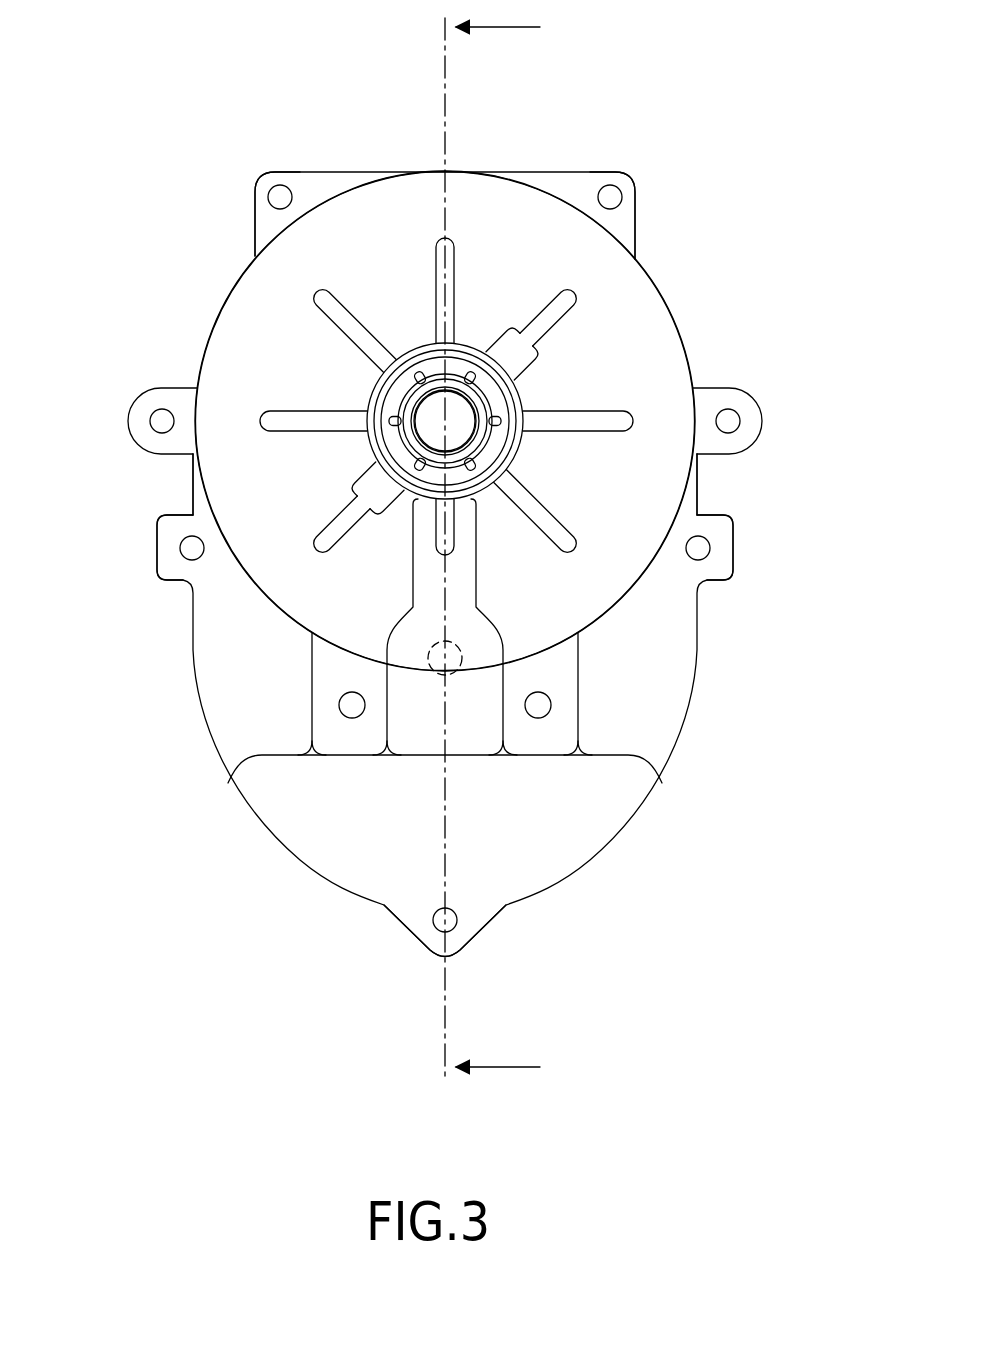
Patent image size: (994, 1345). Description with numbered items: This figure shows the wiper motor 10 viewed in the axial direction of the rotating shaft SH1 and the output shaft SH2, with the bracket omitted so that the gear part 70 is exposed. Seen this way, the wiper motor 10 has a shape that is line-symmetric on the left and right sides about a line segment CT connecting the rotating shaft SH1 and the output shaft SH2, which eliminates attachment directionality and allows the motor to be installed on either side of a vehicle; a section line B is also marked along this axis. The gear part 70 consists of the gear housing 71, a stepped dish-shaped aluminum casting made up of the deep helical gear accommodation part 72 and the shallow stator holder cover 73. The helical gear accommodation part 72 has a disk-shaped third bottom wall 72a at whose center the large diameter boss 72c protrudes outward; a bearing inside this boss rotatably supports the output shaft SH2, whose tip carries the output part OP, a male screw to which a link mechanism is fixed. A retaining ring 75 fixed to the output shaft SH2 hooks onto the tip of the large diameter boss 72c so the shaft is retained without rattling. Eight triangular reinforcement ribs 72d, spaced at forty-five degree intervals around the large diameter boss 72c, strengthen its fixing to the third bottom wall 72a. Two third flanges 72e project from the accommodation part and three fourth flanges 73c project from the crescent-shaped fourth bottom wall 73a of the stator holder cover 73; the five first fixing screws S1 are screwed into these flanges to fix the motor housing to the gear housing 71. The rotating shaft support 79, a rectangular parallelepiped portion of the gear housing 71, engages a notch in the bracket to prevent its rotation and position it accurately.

The wiper motor 10 is at (130, 240).
The gear part 70 is at (670, 302).
The gear housing 71 is at (684, 742).
The helical gear accommodation part 72 is at (356, 194).
The third bottom wall 72a is at (300, 496).
The large diameter boss 72c is at (375, 393).
The reinforcement ribs 72d is at (330, 313).
The third flanges 72e is at (270, 220).
The stator holder cover 73 is at (302, 860).
The fourth bottom wall 73a is at (505, 812).
The fourth flanges 73c is at (176, 524).
The retaining ring 75 is at (493, 445).
The rotating shaft support 79 is at (432, 736).
The output part OP is at (403, 443).
The first fixing screws S1 is at (282, 196).
The rotating shaft SH1 is at (428, 646).
The output shaft SH2 is at (457, 420).
The line segment CT is at (432, 122).
The section line B- B is at (508, 549).